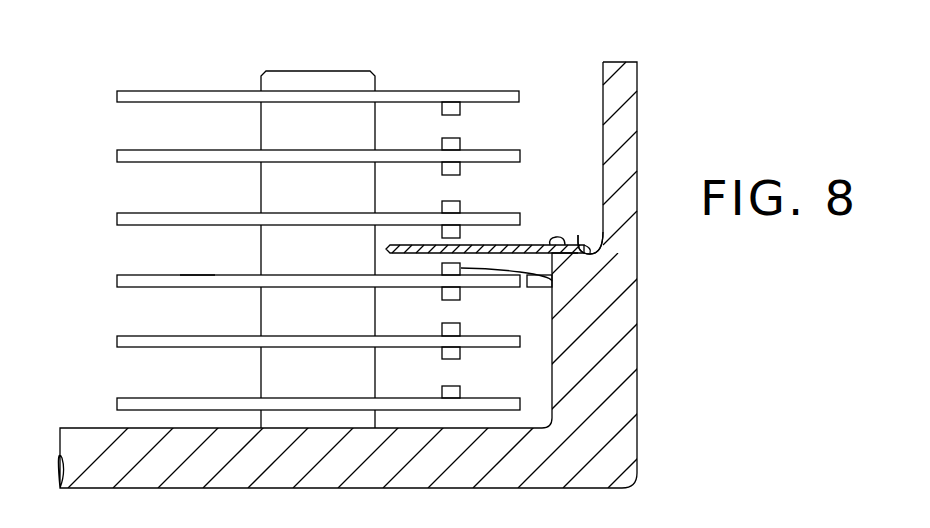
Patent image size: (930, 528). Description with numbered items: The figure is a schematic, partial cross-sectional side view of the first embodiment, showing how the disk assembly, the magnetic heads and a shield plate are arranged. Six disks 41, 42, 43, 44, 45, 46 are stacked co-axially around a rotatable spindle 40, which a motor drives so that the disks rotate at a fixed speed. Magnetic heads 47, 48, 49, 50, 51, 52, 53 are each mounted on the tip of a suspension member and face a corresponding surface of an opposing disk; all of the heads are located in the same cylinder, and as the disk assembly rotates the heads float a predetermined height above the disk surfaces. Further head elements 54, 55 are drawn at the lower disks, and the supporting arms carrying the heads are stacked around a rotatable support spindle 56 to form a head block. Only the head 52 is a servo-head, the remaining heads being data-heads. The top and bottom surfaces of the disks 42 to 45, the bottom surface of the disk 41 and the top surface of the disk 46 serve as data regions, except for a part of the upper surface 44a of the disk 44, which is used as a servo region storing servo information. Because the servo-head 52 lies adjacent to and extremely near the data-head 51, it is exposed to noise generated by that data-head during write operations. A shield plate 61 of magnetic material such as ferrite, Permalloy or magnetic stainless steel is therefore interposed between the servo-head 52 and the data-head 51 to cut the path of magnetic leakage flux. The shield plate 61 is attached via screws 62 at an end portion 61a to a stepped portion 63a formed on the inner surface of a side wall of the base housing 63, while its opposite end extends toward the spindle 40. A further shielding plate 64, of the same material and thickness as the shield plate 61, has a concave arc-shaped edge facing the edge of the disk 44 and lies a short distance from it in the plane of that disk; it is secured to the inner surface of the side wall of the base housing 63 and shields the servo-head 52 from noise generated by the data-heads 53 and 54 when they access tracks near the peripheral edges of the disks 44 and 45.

The spindle 40 is at (312, 82).
The disk 41 is at (143, 92).
The disk 42 is at (140, 152).
The disk 43 is at (146, 214).
The disk 44 is at (136, 278).
The upper surface of disk 44a is at (196, 278).
The disk 45 is at (139, 338).
The disk 46 is at (141, 398).
The magnetic head 47 is at (461, 108).
The magnetic head 48 is at (461, 145).
The magnetic head 49 is at (461, 172).
The magnetic head 50 is at (452, 205).
The data-head 51 is at (461, 233).
The servo-head 52 is at (552, 281).
The data-head 53 is at (442, 297).
The data-head 54 is at (461, 328).
The connector clip 55 is at (461, 355).
The support spindle 56 is at (461, 390).
The shield plate 61 is at (483, 257).
The end portion of shield plate 61a is at (574, 256).
The screws 62 is at (560, 236).
The base housing 63 is at (637, 478).
The stepped portion 63a is at (578, 235).
The shielding plate 64 is at (545, 290).